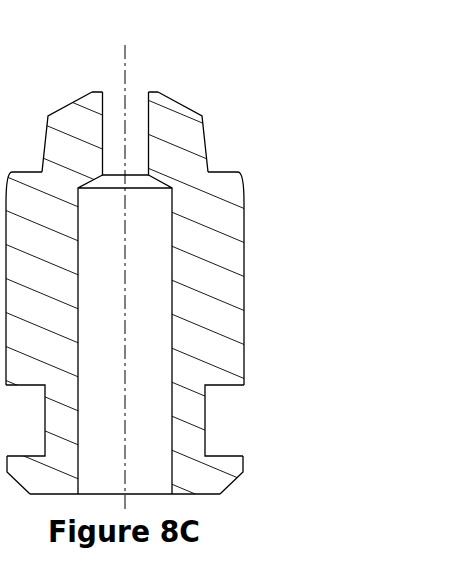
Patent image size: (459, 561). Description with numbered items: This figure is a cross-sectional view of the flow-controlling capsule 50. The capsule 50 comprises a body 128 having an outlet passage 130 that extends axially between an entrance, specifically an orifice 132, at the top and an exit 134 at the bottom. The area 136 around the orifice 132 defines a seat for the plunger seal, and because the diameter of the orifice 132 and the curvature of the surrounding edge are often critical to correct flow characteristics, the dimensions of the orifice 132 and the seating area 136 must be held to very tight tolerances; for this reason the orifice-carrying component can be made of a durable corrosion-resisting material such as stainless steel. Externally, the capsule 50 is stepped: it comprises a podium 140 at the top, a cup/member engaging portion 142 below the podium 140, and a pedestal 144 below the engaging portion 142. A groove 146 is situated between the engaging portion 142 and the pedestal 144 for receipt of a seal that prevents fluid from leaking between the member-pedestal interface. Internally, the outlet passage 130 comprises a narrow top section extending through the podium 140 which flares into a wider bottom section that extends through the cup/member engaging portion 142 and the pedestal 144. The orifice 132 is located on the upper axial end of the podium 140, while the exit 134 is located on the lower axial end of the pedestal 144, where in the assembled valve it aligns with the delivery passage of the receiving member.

The flow-controlling capsule 50 is at (263, 308).
The body 128 is at (232, 251).
The outlet passage 130 is at (166, 280).
The orifice 132 is at (128, 105).
The exit 134 is at (151, 494).
The seating area 136 is at (90, 92).
The podium 140 is at (190, 142).
The cup/member engaging portion 142 is at (217, 345).
The pedestal 144 is at (218, 473).
The groove 146 is at (225, 421).